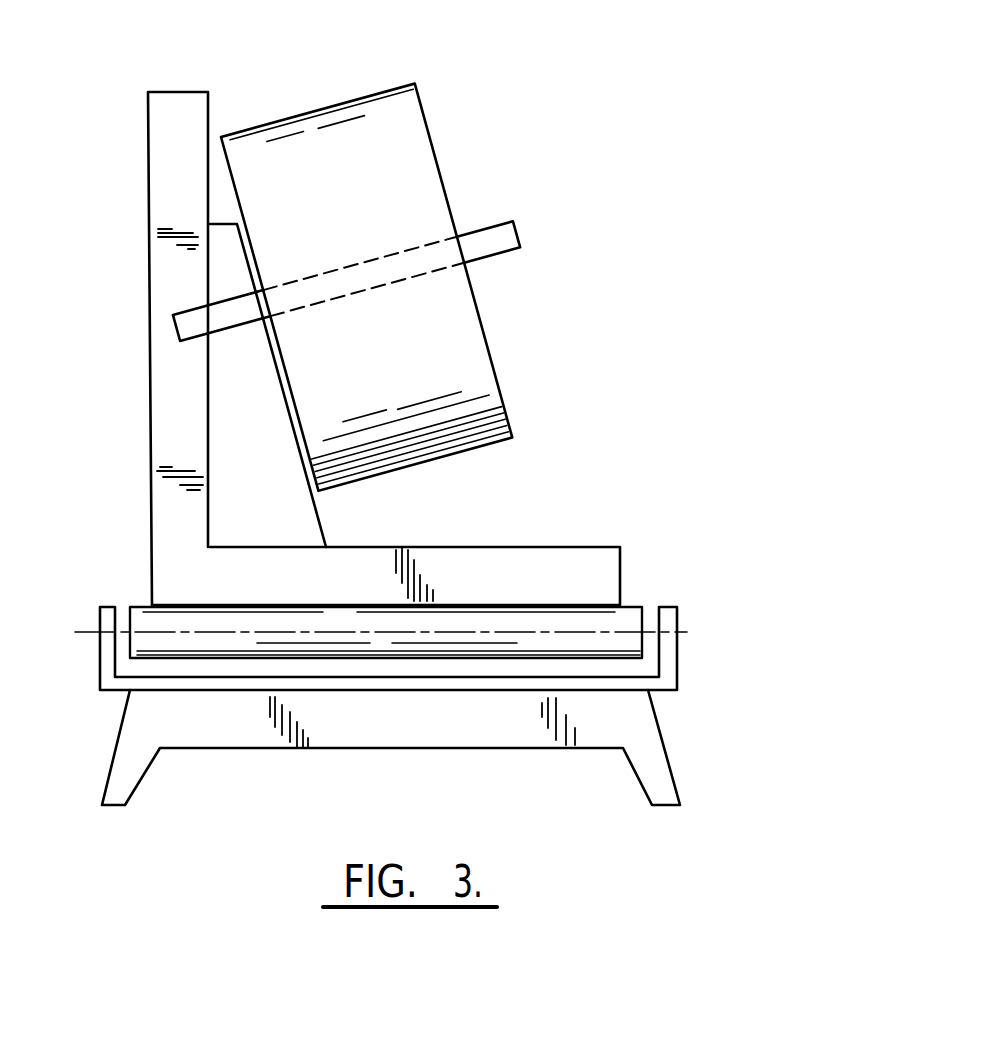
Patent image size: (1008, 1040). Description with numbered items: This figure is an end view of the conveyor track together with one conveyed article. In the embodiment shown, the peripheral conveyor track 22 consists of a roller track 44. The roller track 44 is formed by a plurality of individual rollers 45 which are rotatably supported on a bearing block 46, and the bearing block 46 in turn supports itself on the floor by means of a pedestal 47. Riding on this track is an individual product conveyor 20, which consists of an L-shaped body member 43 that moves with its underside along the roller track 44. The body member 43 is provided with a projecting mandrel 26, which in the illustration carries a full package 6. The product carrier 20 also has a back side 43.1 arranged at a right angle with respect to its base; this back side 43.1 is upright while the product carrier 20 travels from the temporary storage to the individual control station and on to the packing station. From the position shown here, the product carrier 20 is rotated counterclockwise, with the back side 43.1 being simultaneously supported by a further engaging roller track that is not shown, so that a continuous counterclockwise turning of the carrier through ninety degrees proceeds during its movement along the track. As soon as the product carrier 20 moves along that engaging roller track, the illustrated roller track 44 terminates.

The full package 6 is at (412, 129).
The individual product conveyor 20 is at (568, 338).
The peripheral conveyor track 22 is at (88, 454).
The projecting mandrel 26 is at (498, 233).
The L-shaped body member 43 is at (543, 555).
The back side 43.1 is at (192, 102).
The roller track 44 is at (684, 549).
The individual rollers 45 is at (180, 613).
The bearing block 46 is at (667, 659).
The pedestal 47 is at (653, 737).